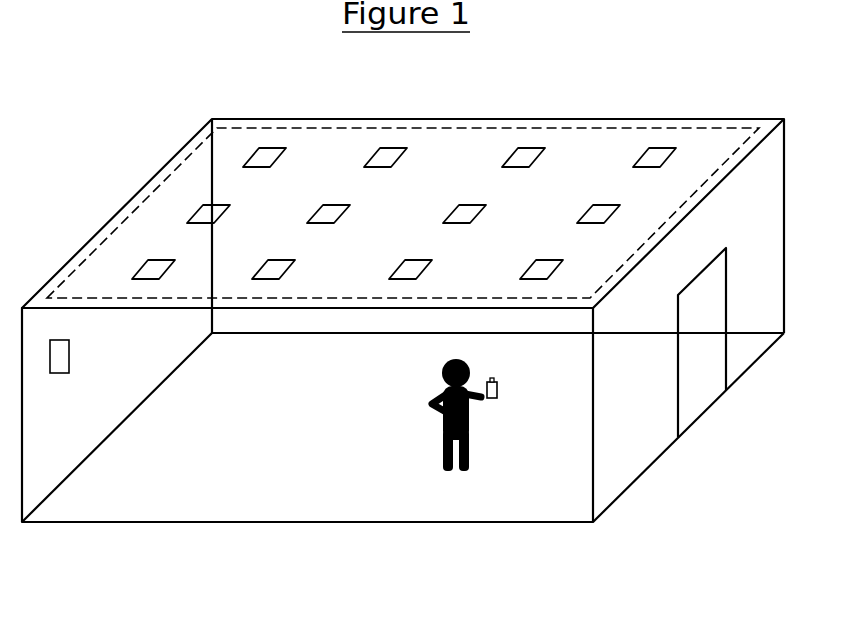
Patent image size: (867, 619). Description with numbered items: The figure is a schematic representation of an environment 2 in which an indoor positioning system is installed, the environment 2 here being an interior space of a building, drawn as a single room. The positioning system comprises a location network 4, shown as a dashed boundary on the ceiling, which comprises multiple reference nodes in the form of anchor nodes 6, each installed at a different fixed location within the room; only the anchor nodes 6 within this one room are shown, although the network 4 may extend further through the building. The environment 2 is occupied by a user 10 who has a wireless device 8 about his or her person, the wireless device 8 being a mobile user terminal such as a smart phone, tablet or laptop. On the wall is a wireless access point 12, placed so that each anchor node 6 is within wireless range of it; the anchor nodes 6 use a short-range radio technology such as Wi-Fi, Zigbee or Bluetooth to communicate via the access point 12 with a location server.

The environment 2 is at (636, 119).
The location network 4 is at (494, 129).
The anchor node 6 is at (538, 158).
The wireless device 8 is at (498, 388).
The user 10 is at (445, 435).
The wireless access point 12 is at (71, 359).